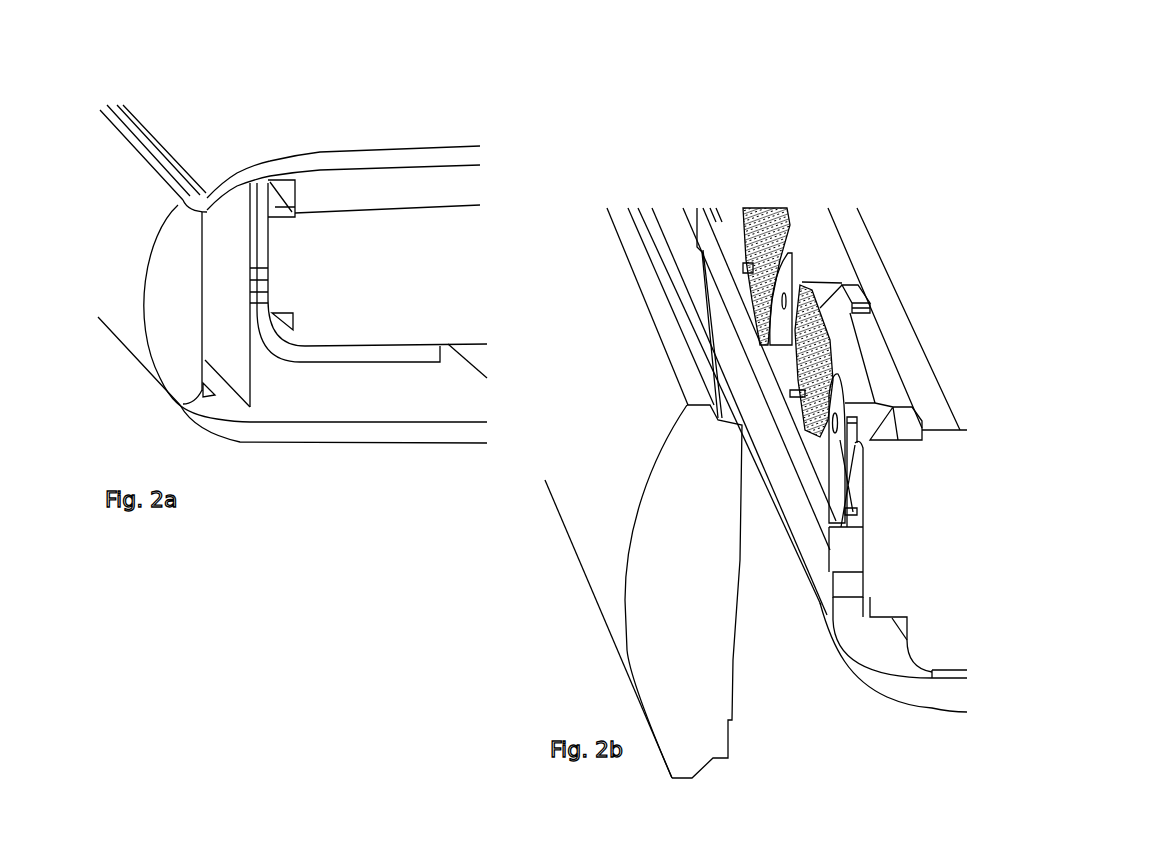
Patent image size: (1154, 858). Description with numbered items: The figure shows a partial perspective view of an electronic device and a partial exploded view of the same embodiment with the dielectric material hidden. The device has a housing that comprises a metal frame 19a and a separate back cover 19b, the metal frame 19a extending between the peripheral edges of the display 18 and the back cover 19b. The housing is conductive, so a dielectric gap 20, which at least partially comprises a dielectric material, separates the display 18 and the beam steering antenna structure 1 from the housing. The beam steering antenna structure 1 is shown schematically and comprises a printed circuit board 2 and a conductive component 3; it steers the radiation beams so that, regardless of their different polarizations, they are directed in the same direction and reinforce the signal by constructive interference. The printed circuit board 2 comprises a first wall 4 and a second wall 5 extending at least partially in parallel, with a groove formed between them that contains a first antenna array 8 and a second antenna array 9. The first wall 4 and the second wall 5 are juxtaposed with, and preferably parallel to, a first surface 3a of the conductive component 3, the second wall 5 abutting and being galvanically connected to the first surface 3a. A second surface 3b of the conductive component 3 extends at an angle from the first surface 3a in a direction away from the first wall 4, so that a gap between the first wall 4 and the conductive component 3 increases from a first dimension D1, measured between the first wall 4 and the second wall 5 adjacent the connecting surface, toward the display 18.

In FIG. 2B, the beam steering antenna structure 1 is at (761, 190).
In FIG. 2A, the printed circuit board 2 is at (350, 354).
In FIG. 2B, the printed circuit board 2 is at (925, 688).
In FIG. 2A, the conductive component 3 is at (443, 279).
In FIG. 2B, the conductive component 3 is at (907, 572).
In FIG. 2B, the first surface 3a is at (870, 507).
In FIG. 2B, the second surface 3b is at (874, 441).
In FIG. 2B, the first wall 4 is at (828, 458).
In FIG. 2B, the second wall 5 is at (869, 470).
In FIG. 2B, the first antenna array 8 is at (804, 266).
In FIG. 2B, the second antenna array 9 is at (838, 342).
In FIG. 2A, the display 18 is at (343, 132).
In FIG. 2A, the metal frame 19a is at (133, 208).
In FIG. 2B, the metal frame 19a is at (661, 535).
In FIG. 2A, the back cover 19b is at (404, 431).
In FIG. 2A, the dielectric gap 20 is at (229, 221).
In FIG. 2B, the dielectric gap 20 is at (786, 608).
In FIG. 2A, the first dimension D1 is at (225, 262).